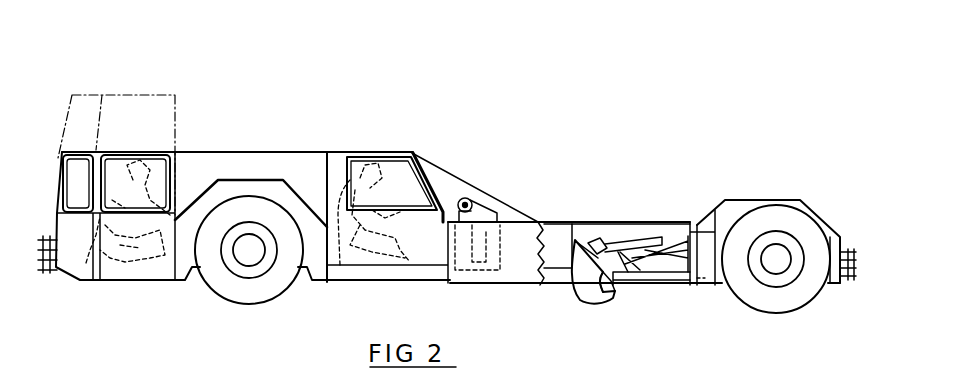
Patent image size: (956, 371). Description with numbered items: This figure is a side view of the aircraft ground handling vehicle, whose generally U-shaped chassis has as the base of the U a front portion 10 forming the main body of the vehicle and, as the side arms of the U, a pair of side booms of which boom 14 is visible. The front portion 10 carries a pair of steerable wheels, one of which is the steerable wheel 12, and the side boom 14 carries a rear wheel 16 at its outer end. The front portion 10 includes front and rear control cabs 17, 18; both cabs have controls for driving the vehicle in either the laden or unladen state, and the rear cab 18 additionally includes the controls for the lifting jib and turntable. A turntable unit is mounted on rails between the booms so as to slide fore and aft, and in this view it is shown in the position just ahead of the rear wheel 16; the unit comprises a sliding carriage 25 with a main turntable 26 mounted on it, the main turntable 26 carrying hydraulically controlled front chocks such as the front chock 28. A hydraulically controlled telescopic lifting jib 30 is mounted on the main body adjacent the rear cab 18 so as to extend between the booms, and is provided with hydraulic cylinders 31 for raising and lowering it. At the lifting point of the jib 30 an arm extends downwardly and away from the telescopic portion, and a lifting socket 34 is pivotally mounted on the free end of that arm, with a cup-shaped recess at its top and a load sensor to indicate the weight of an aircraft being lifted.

The front portion 10 is at (255, 106).
The steerable wheel 12 is at (222, 290).
The side boom 14 is at (625, 232).
The rear wheel 16 is at (800, 292).
The front control cab 17 is at (122, 170).
The rear control cab 18 is at (386, 176).
The sliding carriage 25 is at (665, 279).
The main turntable 26 is at (675, 238).
The front chock 28 is at (590, 238).
The telescopic lifting jib 30 is at (555, 245).
The hydraulic cylinder 31 is at (468, 208).
The lifting socket 34 is at (617, 297).